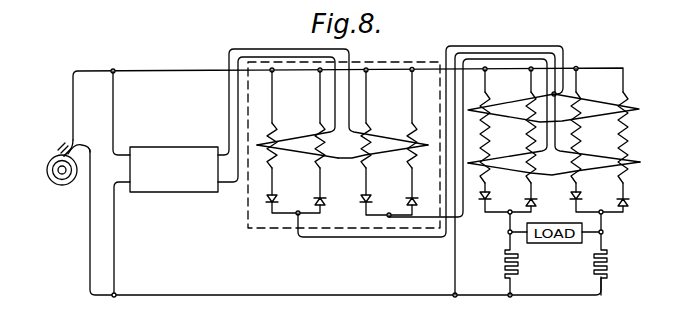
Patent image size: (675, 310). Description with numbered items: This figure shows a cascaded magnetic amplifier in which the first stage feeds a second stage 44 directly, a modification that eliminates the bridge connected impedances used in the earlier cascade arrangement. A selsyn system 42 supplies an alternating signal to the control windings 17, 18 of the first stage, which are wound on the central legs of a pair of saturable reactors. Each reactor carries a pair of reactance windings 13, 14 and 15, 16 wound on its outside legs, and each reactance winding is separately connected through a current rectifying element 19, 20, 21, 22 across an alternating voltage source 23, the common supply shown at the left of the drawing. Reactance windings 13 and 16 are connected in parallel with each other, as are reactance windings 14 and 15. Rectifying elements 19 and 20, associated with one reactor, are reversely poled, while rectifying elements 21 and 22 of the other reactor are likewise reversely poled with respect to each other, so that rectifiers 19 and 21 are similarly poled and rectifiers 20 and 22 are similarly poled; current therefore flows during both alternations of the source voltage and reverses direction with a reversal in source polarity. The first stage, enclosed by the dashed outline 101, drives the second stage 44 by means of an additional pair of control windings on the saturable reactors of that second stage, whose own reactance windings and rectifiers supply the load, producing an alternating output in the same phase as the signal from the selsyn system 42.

The reactance winding 13 is at (271, 129).
The reactance winding 14 is at (319, 129).
The reactance winding 15 is at (367, 128).
The reactance winding 16 is at (411, 128).
The control winding 17 is at (297, 152).
The control winding 18 is at (389, 152).
The current rectifying element 19 is at (286, 208).
The current rectifying element 20 is at (323, 210).
The current rectifying element 21 is at (379, 209).
The current rectifying element 22 is at (413, 212).
The alternating voltage source 23 is at (47, 171).
The selsyn system 42 is at (171, 193).
The second stage 44 is at (587, 60).
The bridge network 101 is at (385, 62).